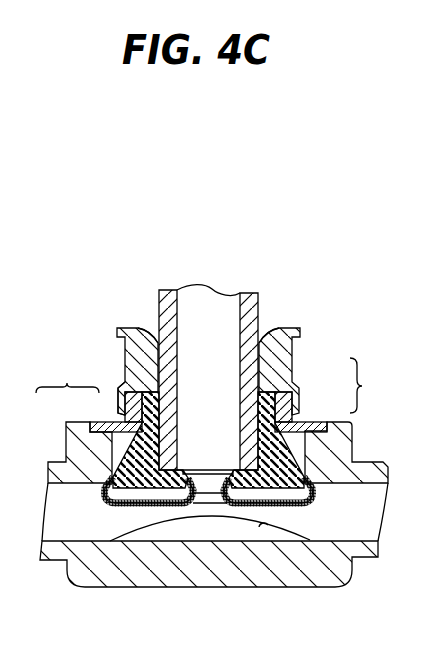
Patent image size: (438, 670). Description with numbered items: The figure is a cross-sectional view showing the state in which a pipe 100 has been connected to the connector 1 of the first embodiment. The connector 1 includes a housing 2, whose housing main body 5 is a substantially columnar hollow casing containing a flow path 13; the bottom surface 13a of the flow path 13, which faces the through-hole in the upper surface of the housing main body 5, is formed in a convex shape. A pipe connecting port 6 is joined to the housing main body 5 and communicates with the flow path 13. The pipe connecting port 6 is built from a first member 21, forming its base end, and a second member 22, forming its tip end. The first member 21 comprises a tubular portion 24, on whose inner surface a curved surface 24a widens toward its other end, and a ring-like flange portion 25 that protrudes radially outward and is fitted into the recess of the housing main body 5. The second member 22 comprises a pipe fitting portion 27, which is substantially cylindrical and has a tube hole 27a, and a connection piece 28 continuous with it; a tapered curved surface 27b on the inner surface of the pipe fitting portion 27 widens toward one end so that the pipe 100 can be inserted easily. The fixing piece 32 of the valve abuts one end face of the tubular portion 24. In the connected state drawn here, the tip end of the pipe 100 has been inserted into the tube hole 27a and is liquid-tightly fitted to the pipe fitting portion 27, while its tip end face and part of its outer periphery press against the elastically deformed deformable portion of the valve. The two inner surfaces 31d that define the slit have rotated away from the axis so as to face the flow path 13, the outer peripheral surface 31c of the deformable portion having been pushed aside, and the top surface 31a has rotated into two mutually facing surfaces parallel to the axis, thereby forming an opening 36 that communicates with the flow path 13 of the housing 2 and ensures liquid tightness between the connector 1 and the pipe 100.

The connector 1 is at (374, 315).
The housing 2 is at (368, 582).
The housing main body 5 is at (115, 580).
The pipe connecting port 6 is at (113, 307).
The flow path 13 is at (306, 530).
The bottom surface of the flow path 13a is at (268, 530).
The first member 21 is at (67, 377).
The second member 22 is at (330, 395).
The tubular portion 24 is at (122, 404).
The curved surface 24a is at (165, 423).
The flange portion 25 is at (96, 426).
The pipe fitting portion 27 is at (284, 371).
The tube hole 27a is at (276, 326).
The curved surface (tapered surface) 27b is at (152, 333).
The connection piece 28 is at (296, 401).
The top surface 31a is at (186, 504).
The outer peripheral surface 31c is at (115, 505).
The inner surfaces 31d is at (255, 507).
The fixing piece 32 is at (116, 386).
The opening 36 is at (218, 492).
The pipe 100 is at (274, 264).